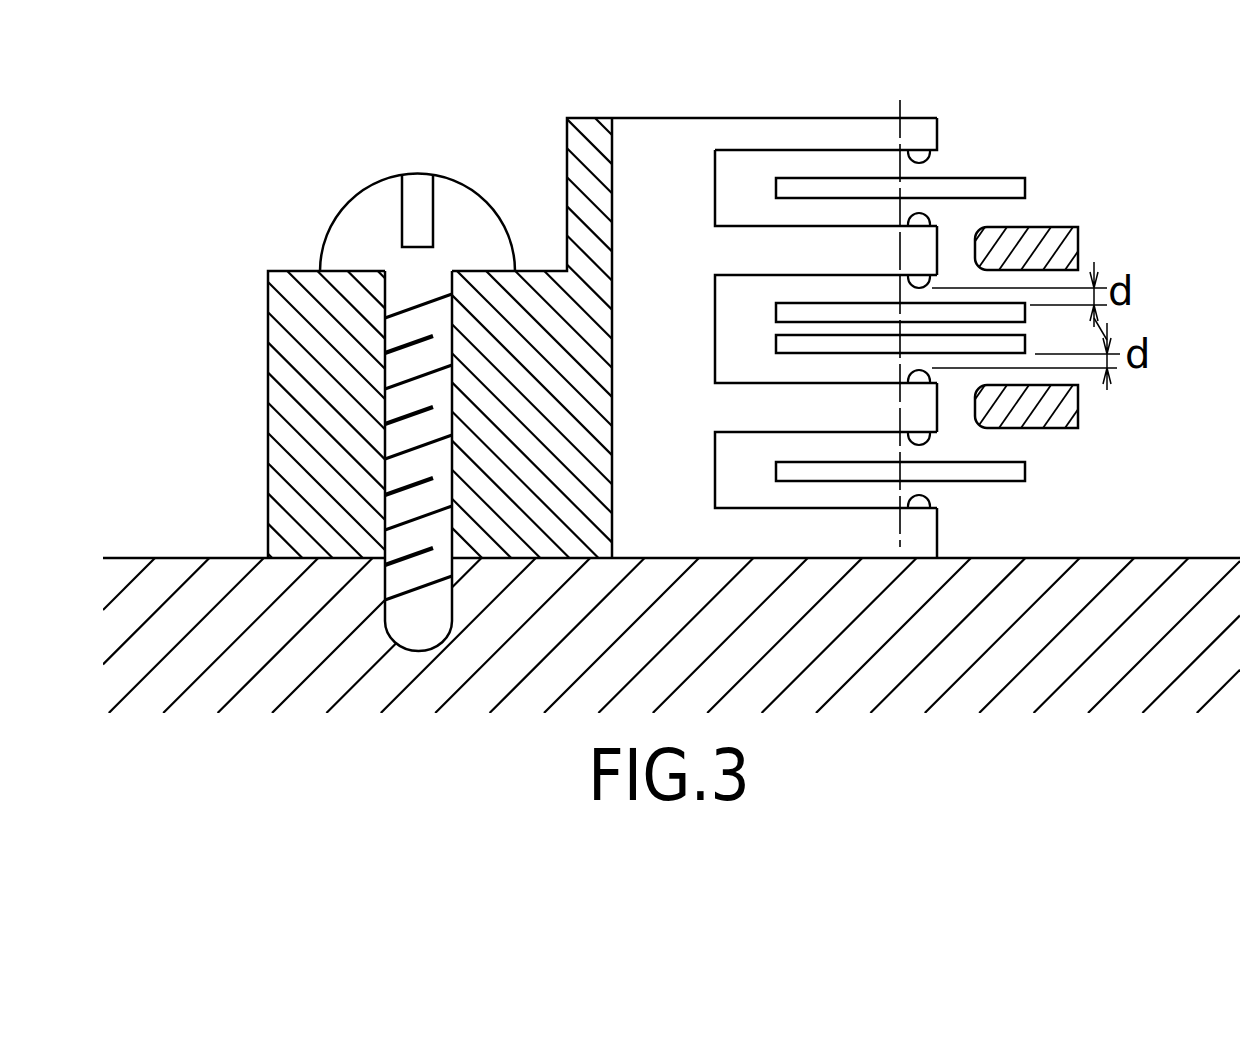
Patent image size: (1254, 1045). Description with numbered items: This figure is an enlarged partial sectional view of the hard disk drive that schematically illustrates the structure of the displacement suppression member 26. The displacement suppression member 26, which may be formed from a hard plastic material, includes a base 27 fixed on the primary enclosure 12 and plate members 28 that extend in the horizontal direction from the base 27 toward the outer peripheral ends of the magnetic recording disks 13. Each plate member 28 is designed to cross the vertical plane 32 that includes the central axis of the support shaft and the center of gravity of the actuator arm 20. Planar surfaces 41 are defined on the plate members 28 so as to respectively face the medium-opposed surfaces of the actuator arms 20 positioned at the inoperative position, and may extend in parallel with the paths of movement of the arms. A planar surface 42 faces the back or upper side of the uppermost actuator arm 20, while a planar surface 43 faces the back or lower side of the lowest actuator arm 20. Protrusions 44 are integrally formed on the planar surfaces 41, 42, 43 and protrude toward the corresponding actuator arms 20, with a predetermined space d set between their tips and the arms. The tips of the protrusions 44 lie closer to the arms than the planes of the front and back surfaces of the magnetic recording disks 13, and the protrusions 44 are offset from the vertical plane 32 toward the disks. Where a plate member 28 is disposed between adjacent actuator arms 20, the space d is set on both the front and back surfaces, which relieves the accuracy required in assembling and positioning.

The primary enclosure 12 is at (225, 558).
The magnetic recording disk 13 is at (1062, 227).
The actuator arm 20 is at (777, 352).
The displacement suppression member 26 is at (548, 128).
The base 27 is at (268, 330).
The plate member 28 is at (940, 236).
The vertical plane 32 is at (900, 110).
The planar surface 41 is at (747, 225).
The planar surface 42 is at (745, 151).
The planar surface 43 is at (750, 508).
The protrusion 44 is at (930, 162).